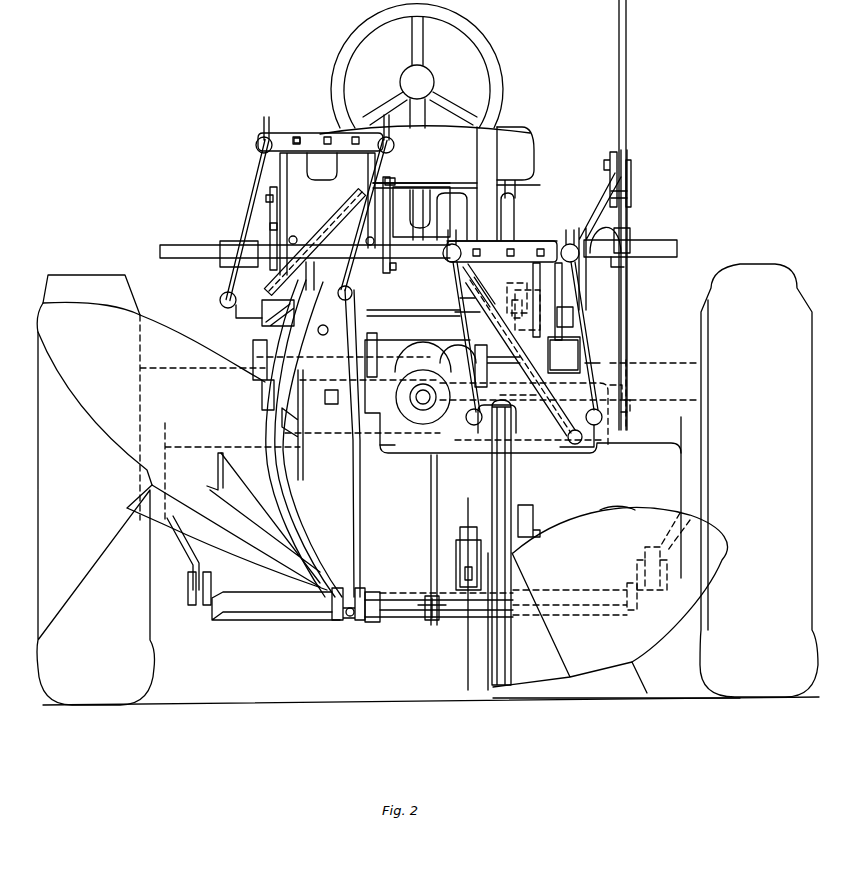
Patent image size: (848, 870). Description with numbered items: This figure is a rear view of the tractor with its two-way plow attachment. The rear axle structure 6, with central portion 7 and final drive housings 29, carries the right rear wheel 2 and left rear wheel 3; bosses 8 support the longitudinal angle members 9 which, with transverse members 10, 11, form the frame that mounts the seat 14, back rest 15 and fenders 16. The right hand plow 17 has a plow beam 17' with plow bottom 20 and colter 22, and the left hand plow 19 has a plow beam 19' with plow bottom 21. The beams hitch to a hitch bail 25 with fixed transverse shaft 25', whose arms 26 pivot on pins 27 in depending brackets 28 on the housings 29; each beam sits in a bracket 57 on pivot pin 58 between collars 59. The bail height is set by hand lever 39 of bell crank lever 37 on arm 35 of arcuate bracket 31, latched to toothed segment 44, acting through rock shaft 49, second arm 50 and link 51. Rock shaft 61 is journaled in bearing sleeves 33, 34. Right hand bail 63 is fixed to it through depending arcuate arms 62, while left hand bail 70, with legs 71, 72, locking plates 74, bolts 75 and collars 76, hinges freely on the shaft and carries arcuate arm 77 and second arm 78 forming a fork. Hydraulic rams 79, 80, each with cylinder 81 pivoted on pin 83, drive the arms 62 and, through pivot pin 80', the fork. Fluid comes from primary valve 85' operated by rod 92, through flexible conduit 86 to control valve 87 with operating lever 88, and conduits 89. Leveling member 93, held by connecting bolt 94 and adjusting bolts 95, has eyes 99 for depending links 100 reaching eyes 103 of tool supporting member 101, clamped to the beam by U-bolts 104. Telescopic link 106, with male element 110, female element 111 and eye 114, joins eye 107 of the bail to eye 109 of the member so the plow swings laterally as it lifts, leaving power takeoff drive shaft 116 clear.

The right rear wheel 2 is at (710, 298).
The left rear wheel 3 is at (78, 282).
The rear axle structure 6 is at (165, 375).
The central portion 7 is at (385, 450).
The bosses 8 is at (256, 358).
The angle members 9 is at (258, 340).
The transverse member 10 is at (318, 395).
The transverse member 11 is at (405, 312).
The seat 14 is at (407, 320).
The back rest 15 is at (510, 138).
The fenders 16 is at (592, 293).
The right hand plow 17 is at (620, 577).
The plow beam 17' is at (616, 549).
The left hand plow 19 is at (204, 402).
The plow beam 19' is at (325, 438).
The right hand plow bottom 20 is at (620, 510).
The left hand plow bottom 21 is at (160, 325).
The colter 22 is at (466, 522).
The hitch bail 25 is at (446, 618).
The fixed transverse shaft 25' is at (446, 596).
The arms 26 is at (230, 592).
The pivot pins 27 is at (190, 585).
The depending brackets 28 is at (185, 552).
The final drive housings 29 is at (681, 473).
The arcuate bracket 31 is at (582, 310).
The bearing sleeve 33 is at (617, 262).
The bearing sleeve 34 is at (228, 268).
The arm 35 is at (612, 178).
The bell crank lever 37 is at (620, 183).
The hand lever 39 is at (627, 92).
The toothed segment 44 is at (627, 200).
The rock shaft 49 is at (632, 398).
The second arm 50 is at (436, 440).
The link 51 is at (630, 310).
The bracket 57 is at (366, 620).
The pivot pin 58 is at (350, 617).
The collars 59 is at (360, 590).
The rock shaft 61 is at (655, 246).
The depending arcuate arms 62 is at (536, 270).
The bail 63 is at (515, 242).
The second bail 70 is at (292, 152).
The leg 71 is at (385, 215).
The leg 72 is at (286, 185).
The locking plate 74 is at (278, 220).
The bolts 75 is at (268, 200).
The collars 76 is at (298, 245).
The arcuate arm 77 is at (278, 313).
The second arm 78 is at (316, 276).
The hydraulic ram 79 is at (552, 361).
The hydraulic ram 80 is at (318, 342).
The pivot pin 80' is at (337, 286).
The cylinder 81 is at (527, 310).
The pin 83 is at (258, 380).
The primary valve 85' is at (458, 350).
The flexible conduit 86 is at (500, 375).
The control valve 87 is at (520, 304).
The operating lever 88 is at (514, 294).
The flexible conduits 89 is at (430, 365).
The rod 92 is at (478, 300).
The leveling member 93 is at (312, 137).
The connecting bolt 94 is at (327, 145).
The adjusting bolts 95 is at (296, 138).
The eyes 99 is at (452, 242).
The depending links 100 is at (462, 300).
The tool supporting member 101 is at (566, 458).
The eyes 103 is at (220, 300).
The U-bolts 104 is at (512, 432).
The telescopic link 106 is at (340, 215).
The eye 107 is at (397, 183).
The eye 109 is at (240, 332).
The male element 110 is at (454, 313).
The female element 111 is at (538, 392).
The eye 114 is at (388, 178).
The power takeoff drive shaft 116 is at (413, 400).